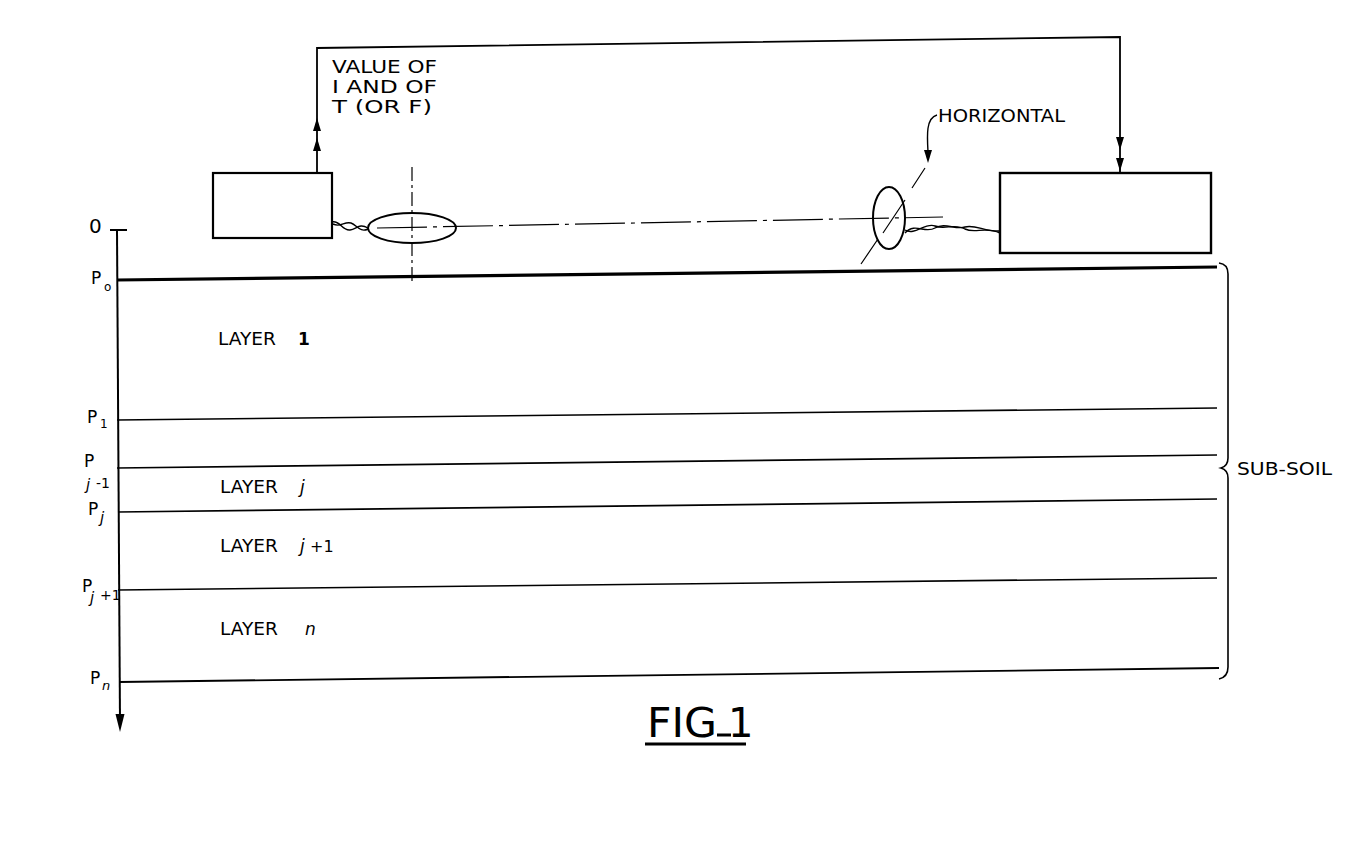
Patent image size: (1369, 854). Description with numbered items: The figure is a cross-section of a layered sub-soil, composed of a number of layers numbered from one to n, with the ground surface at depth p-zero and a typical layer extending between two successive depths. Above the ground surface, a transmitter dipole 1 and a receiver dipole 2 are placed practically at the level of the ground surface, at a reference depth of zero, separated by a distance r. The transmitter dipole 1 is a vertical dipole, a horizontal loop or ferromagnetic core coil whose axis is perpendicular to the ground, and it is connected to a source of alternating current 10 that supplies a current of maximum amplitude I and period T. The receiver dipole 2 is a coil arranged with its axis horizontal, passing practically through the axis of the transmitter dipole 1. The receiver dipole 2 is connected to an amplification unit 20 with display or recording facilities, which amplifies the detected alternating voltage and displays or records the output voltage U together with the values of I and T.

The transmitter dipole 1 is at (432, 213).
The receiver dipole 2 is at (878, 201).
The source of alternating current 10 is at (290, 173).
The amplification unit 20 is at (1188, 173).